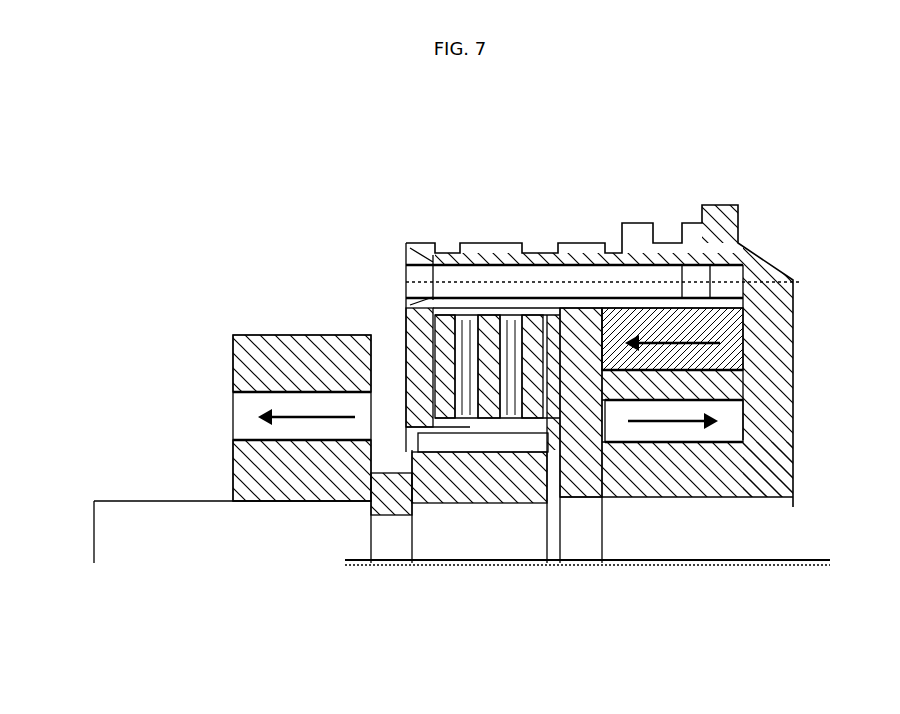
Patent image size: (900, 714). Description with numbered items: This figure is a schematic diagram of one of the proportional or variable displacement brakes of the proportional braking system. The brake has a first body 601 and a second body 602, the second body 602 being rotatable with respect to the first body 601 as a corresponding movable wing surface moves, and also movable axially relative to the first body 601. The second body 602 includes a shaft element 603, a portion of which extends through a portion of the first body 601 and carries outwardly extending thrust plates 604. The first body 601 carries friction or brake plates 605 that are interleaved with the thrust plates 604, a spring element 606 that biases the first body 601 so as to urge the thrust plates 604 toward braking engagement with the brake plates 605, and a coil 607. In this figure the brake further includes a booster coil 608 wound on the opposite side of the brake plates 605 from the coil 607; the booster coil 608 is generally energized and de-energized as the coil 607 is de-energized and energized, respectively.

The first body 601 is at (770, 272).
The second body 602 is at (420, 352).
The shaft element 603 is at (350, 560).
The thrust plates 604 is at (533, 417).
The brake plates 605 is at (512, 347).
The spring element 606 is at (652, 322).
The coil 607 is at (752, 421).
The booster coil 608 is at (233, 415).